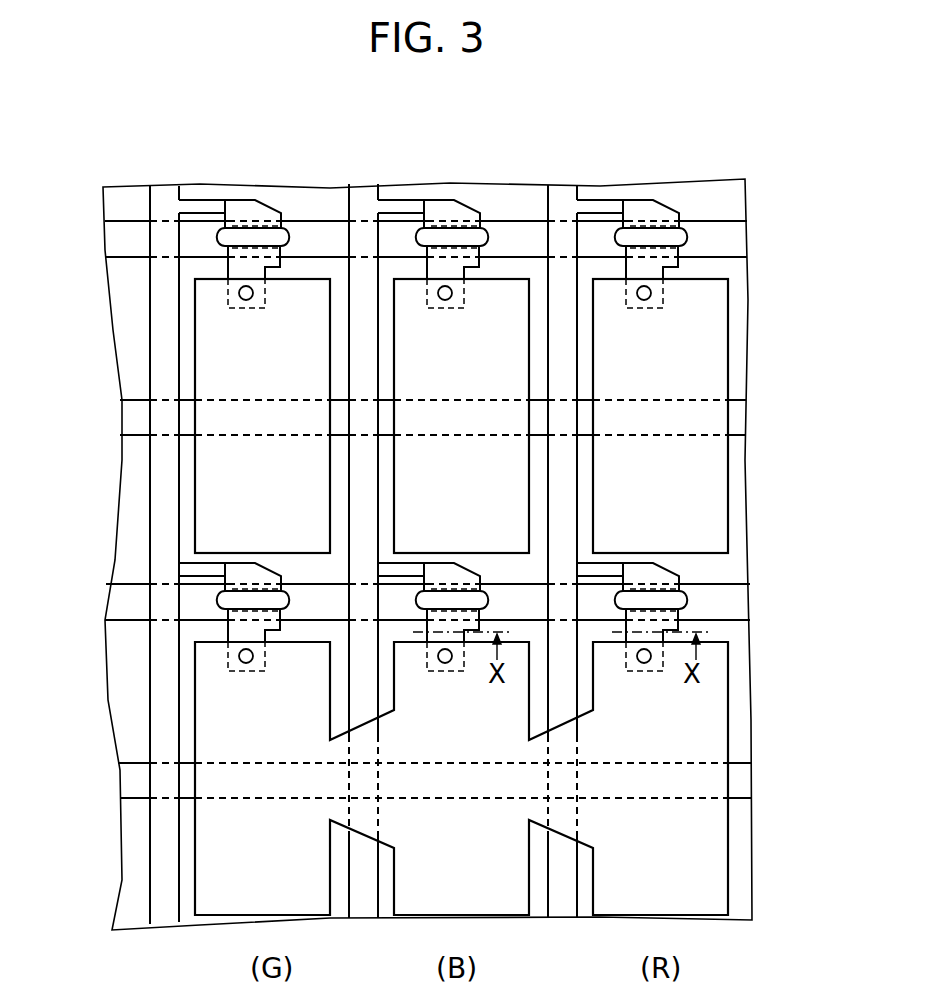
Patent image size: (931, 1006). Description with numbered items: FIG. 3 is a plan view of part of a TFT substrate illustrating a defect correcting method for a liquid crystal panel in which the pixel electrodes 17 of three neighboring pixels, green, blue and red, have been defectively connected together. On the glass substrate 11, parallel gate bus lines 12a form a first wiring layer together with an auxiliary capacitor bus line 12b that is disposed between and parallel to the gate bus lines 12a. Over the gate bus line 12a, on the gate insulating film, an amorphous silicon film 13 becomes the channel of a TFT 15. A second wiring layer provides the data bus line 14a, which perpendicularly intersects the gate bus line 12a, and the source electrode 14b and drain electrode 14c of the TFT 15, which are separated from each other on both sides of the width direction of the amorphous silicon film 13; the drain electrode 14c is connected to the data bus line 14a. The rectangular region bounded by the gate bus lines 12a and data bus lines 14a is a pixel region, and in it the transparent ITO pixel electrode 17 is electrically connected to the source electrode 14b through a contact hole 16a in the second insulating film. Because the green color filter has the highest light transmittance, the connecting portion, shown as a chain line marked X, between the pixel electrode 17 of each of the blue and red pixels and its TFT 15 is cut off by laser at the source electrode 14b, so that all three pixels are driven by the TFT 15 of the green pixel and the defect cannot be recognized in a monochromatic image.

The glass substrate 11 is at (738, 200).
The gate bus line 12a is at (122, 243).
The auxiliary capacitor bus line 12b is at (132, 415).
The amorphous silicon film 13 is at (215, 208).
The data bus line 14a is at (157, 187).
The source electrode 14b is at (267, 268).
The drain electrode 14c is at (258, 200).
The TFT 15 is at (282, 208).
The contact hole 16a is at (246, 304).
The pixel electrode 17 is at (205, 335).